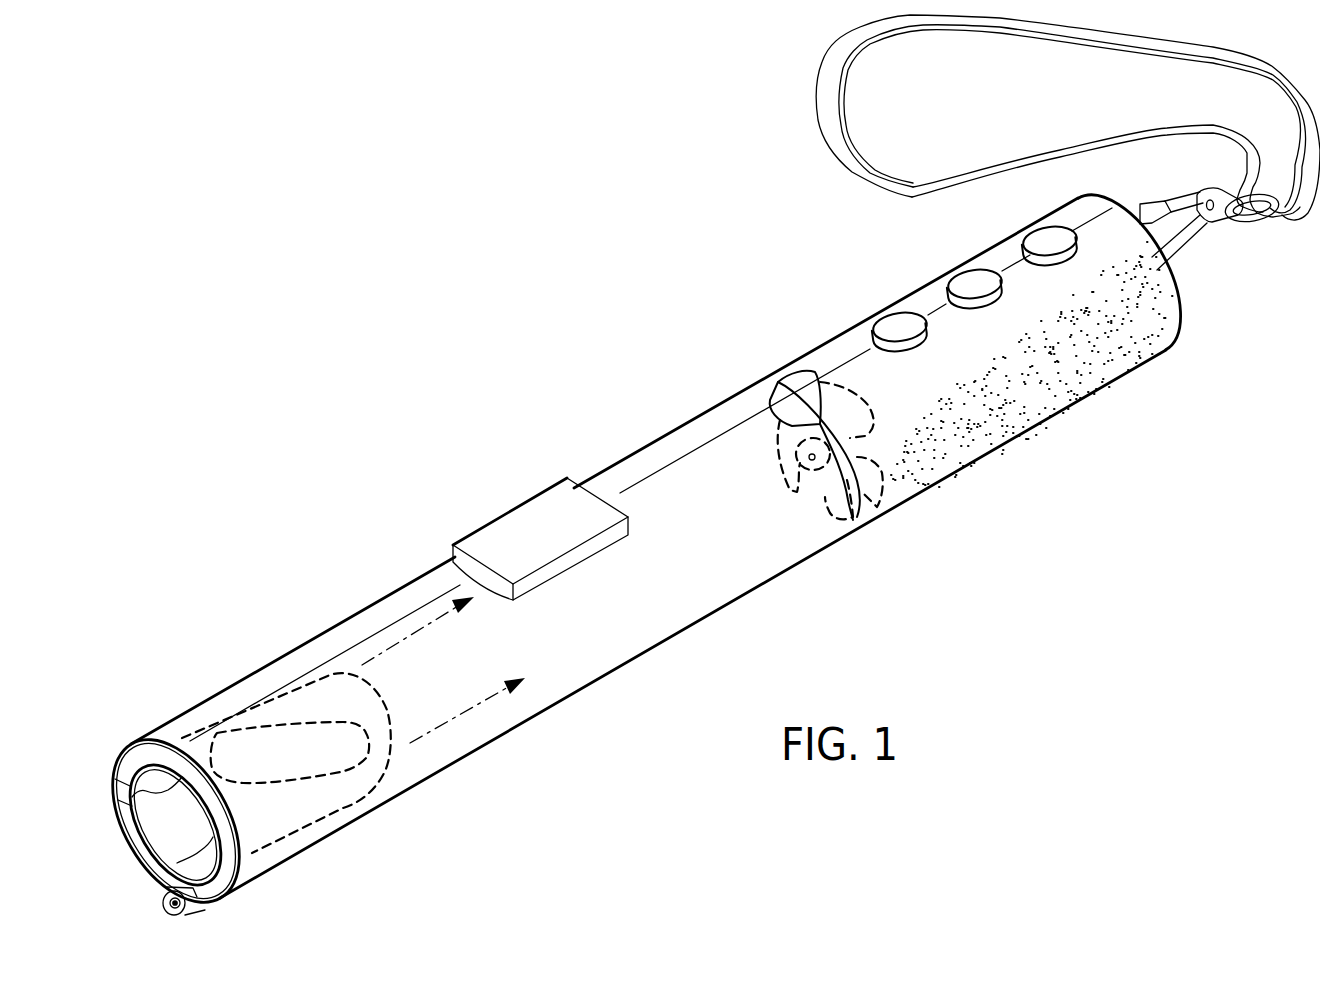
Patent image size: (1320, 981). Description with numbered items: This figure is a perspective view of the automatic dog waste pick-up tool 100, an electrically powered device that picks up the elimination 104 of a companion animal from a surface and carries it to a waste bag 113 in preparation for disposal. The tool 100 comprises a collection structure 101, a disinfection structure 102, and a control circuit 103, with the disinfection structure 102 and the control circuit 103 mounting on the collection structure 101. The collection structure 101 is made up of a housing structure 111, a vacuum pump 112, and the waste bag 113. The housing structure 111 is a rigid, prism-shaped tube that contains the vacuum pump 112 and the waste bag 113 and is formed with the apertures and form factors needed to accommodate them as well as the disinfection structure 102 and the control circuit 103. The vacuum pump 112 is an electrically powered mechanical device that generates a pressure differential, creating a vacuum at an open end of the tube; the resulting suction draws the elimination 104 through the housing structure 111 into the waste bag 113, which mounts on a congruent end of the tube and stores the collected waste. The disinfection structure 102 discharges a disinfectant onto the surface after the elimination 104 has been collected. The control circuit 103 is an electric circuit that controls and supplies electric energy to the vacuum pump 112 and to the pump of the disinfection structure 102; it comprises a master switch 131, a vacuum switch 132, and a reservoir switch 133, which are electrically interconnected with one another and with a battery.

The automatic dog waste pick-up tool 100 is at (372, 195).
The collection structure 101 is at (1263, 449).
The disinfection structure 102 is at (193, 908).
The control circuit 103 is at (920, 212).
The elimination 104 is at (305, 750).
The housing structure 111 is at (590, 684).
The vacuum pump 112 is at (877, 475).
The waste bag 113 is at (297, 835).
The master switch 131 is at (1050, 243).
The vacuum switch 132 is at (972, 286).
The reservoir switch 133 is at (898, 328).